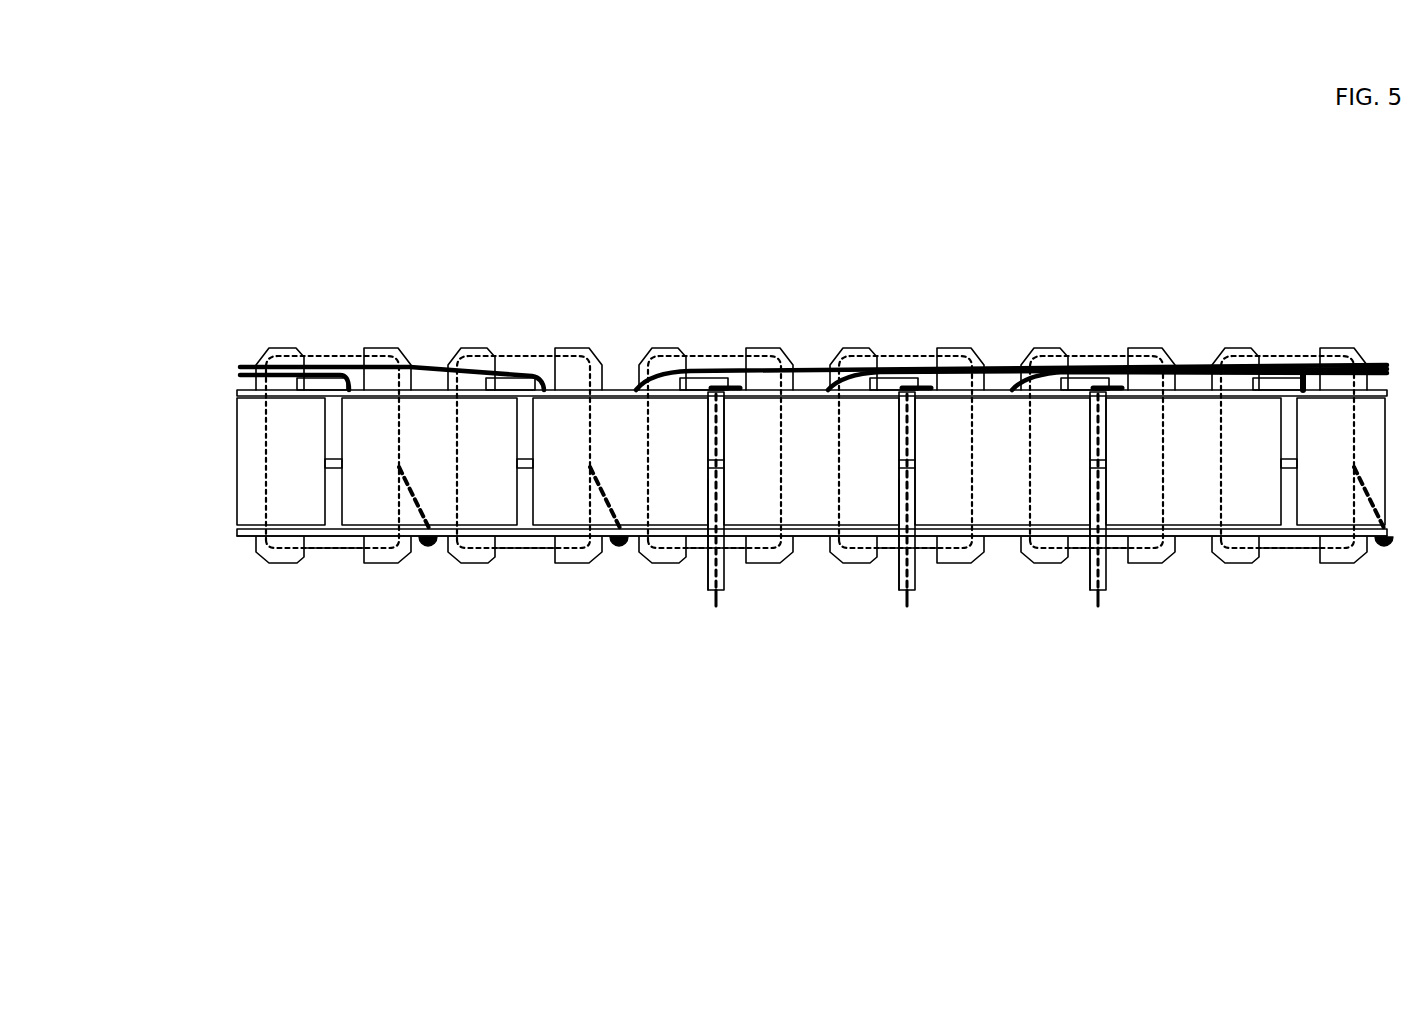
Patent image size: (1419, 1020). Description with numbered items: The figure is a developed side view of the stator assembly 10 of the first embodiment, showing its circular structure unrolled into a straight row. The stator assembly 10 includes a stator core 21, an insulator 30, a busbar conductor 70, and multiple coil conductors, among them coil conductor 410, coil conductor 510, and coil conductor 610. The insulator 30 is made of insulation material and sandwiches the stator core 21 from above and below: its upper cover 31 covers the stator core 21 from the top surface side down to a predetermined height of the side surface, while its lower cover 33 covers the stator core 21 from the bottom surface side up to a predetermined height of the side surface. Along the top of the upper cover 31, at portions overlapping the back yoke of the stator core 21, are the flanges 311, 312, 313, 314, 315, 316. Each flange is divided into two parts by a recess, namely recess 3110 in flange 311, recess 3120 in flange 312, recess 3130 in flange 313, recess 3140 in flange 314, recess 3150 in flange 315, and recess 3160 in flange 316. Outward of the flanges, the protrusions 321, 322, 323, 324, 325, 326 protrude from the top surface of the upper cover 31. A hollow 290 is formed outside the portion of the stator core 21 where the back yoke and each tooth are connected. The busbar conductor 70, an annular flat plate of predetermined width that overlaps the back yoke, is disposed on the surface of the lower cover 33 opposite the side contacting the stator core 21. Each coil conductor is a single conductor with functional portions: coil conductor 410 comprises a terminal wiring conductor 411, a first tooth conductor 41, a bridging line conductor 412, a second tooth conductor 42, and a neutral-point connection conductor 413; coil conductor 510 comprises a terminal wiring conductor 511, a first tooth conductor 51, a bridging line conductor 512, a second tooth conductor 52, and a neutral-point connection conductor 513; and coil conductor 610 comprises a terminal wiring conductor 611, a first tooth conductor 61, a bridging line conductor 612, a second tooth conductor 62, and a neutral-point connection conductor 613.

The stator assembly 10 is at (1357, 262).
The stator core 21 is at (1370, 444).
The insulator 30 is at (192, 422).
The upper cover 31 is at (243, 393).
The lower cover 33 is at (243, 528).
The first tooth conductor 41 is at (702, 547).
The second tooth conductor 42 is at (1289, 549).
The first tooth conductor 51 is at (891, 547).
The second tooth conductor 52 is at (333, 549).
The first tooth conductor 61 is at (1083, 547).
The second tooth conductor 62 is at (525, 549).
The busbar conductor 70 is at (242, 536).
The hollow 290 is at (706, 503).
The flange 311 is at (660, 352).
The flange 312 is at (853, 352).
The flange 313 is at (1043, 354).
The flange 314 is at (1233, 354).
The flange 315 is at (280, 352).
The flange 316 is at (470, 352).
The protrusion 321 is at (698, 383).
The protrusion 322 is at (891, 383).
The protrusion 323 is at (1079, 383).
The protrusion 324 is at (1271, 383).
The protrusion 325 is at (316, 383).
The protrusion 326 is at (506, 383).
The coil conductor 410 is at (714, 608).
The terminal wiring conductor 411 is at (744, 624).
The bridging line conductor 412 is at (805, 366).
The neutral-point connection conductor 413 is at (1368, 503).
The coil conductor 510 is at (905, 608).
The terminal wiring conductor 511 is at (936, 624).
The bridging line conductor 512 is at (997, 390).
The neutral-point connection conductor 513 is at (410, 497).
The coil conductor 610 is at (1096, 608).
The terminal wiring conductor 611 is at (1128, 624).
The bridging line conductor 612 is at (423, 364).
The neutral-point connection conductor 613 is at (605, 497).
The recess 3110 is at (728, 345).
The recess 3120 is at (921, 345).
The recess 3130 is at (1111, 346).
The recess 3140 is at (1301, 346).
The recess 3150 is at (346, 345).
The recess 3160 is at (538, 345).